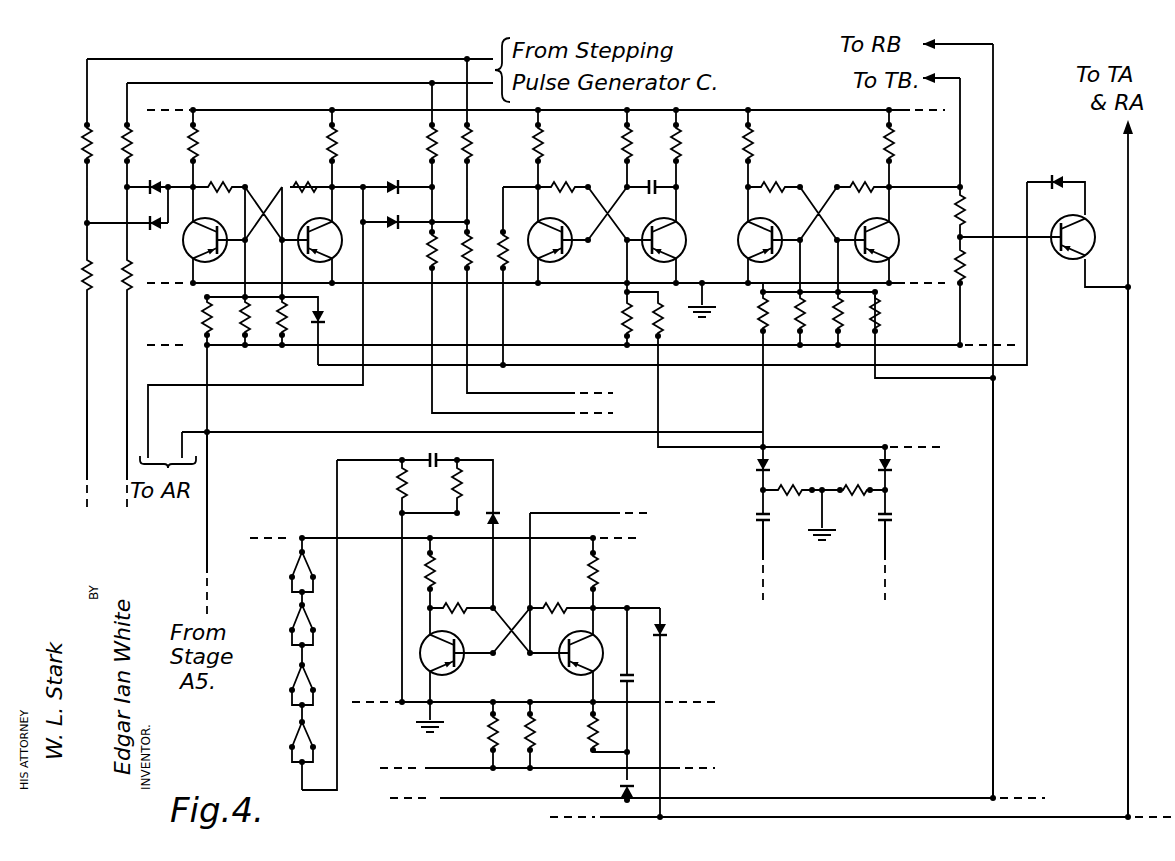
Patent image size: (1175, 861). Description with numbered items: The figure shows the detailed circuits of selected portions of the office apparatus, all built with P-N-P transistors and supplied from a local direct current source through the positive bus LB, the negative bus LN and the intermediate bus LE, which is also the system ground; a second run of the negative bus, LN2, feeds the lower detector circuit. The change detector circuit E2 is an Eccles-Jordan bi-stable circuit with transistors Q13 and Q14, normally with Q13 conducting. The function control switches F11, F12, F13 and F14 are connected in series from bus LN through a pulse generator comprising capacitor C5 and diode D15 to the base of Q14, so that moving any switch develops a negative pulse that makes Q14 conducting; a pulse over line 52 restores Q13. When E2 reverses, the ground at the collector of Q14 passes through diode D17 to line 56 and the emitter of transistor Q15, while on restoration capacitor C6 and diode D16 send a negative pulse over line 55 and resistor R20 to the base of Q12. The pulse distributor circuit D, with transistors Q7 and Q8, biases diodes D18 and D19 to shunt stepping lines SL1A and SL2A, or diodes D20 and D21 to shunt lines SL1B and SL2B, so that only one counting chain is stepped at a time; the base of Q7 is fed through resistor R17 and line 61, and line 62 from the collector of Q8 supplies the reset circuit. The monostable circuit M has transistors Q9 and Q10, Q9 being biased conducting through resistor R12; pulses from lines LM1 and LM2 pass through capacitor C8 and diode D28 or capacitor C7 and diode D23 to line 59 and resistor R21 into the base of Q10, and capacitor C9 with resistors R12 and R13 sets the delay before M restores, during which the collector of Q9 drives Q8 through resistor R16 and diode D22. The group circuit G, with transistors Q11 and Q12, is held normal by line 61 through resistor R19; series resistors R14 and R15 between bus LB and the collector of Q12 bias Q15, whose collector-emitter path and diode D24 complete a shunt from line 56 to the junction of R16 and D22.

The negative potential bus LN is at (255, 100).
The intermediate potential bus LE is at (178, 288).
The positive potential bus LB is at (178, 352).
The pulse distributor circuit D is at (264, 158).
The monostable circuit M is at (582, 146).
The group circuit G is at (832, 146).
The diode D15 is at (499, 504).
The diode D16 is at (616, 784).
The diode D17 is at (664, 630).
The diode D18 is at (152, 232).
The diode D19 is at (162, 178).
The diode D20 is at (402, 232).
The diode D21 is at (400, 170).
The diode D22 is at (324, 316).
The diode D23 is at (895, 468).
The diode D24 is at (1056, 176).
The diode D28 is at (756, 468).
The transistor Q7 is at (226, 256).
The transistor Q8 is at (304, 258).
The transistor Q9 is at (568, 258).
The transistor Q10 is at (648, 258).
The transistor Q11 is at (778, 258).
The transistor Q12 is at (898, 252).
The transistor Q13 is at (462, 672).
The transistor Q14 is at (568, 672).
The transistor Q15 is at (1060, 256).
The resistor R12 is at (620, 162).
The resistor R13 is at (680, 134).
The resistor R14 is at (954, 204).
The resistor R15 is at (958, 284).
The resistor R16 is at (501, 228).
The resistor R17 is at (202, 314).
The resistor R19 is at (761, 314).
The resistor R20 is at (884, 322).
The resistor R21 is at (662, 332).
The capacitor C5 is at (440, 458).
The capacitor C6 is at (632, 678).
The capacitor C7 is at (892, 510).
The capacitor C8 is at (752, 508).
The capacitor C9 is at (652, 180).
The change detector circuit E2 is at (470, 580).
The function control switch F11 is at (292, 745).
The function control switch F12 is at (292, 687).
The function control switch F13 is at (292, 627).
The function control switch F14 is at (292, 574).
The line LM1 is at (770, 586).
The line LM2 is at (892, 586).
The stepping line SL1A is at (127, 448).
The stepping line SL2A is at (87, 480).
The stepping line SL1B is at (572, 393).
The stepping line SL2B is at (572, 413).
The line 52 is at (602, 512).
The line 55 is at (994, 488).
The line 56 is at (1126, 526).
The line 59 is at (830, 432).
The line 61 is at (210, 462).
The line 62 is at (178, 388).
The LN supply line (lower) LN2 is at (382, 522).